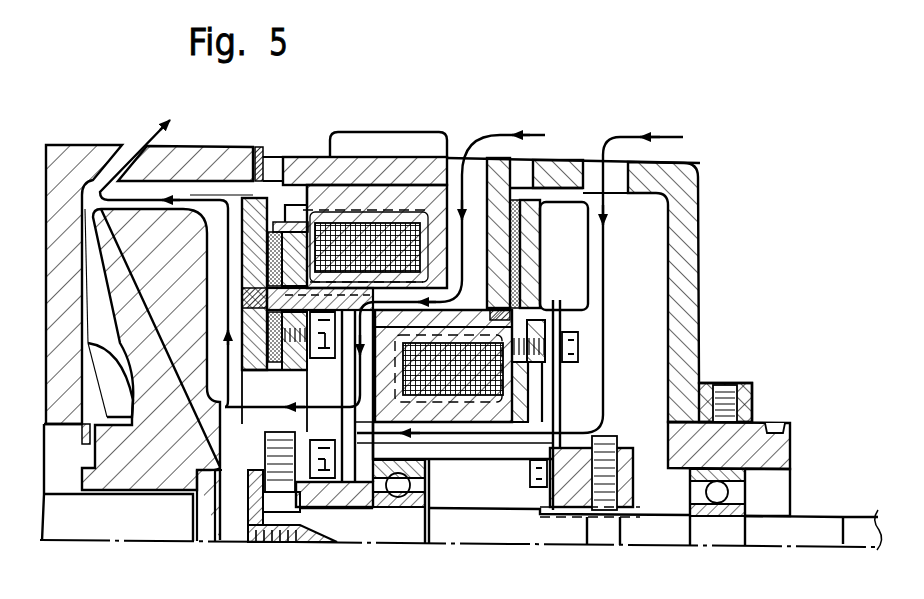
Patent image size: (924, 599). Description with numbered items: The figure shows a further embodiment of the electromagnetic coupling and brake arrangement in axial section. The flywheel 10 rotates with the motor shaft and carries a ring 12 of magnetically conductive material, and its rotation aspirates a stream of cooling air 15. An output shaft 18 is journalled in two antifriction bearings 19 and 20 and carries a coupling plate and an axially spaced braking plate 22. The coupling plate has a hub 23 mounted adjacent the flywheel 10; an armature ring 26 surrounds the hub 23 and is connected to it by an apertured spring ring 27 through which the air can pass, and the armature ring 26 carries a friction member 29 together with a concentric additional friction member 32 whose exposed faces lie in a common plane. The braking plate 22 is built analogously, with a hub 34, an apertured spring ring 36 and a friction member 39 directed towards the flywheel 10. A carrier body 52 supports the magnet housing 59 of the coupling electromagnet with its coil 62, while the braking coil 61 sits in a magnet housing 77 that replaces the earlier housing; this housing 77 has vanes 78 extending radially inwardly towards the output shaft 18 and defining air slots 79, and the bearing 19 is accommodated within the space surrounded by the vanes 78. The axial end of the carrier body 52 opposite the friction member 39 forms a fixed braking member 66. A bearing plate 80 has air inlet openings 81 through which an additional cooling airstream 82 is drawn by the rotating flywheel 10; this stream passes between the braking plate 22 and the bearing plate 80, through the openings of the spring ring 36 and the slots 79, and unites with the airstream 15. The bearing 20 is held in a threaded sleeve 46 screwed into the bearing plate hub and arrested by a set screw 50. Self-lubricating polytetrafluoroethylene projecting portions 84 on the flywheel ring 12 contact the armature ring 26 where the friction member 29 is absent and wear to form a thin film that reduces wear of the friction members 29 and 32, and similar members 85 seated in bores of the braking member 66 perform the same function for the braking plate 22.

The flywheel 10 is at (116, 497).
The ring 12 is at (250, 200).
The cooling airstream 15 is at (152, 133).
The output shaft 18 is at (468, 537).
The antifriction bearing 19 is at (427, 472).
The antifriction bearing 20 is at (745, 487).
The braking plate 22 is at (540, 263).
The hub 23 is at (352, 505).
The armature ring 26 is at (350, 313).
The spring ring 27 is at (307, 394).
The friction member 29 is at (270, 348).
The additional friction member 32 is at (268, 255).
The hub 34 is at (625, 455).
The spring ring 36 is at (556, 394).
The friction member 39 is at (516, 243).
The threaded sleeve 46 is at (786, 448).
The set screw 50 is at (728, 388).
The carrier body 52 is at (493, 170).
The magnet housing 59 is at (322, 183).
The coil 61 is at (458, 358).
The coil 62 is at (348, 240).
The braking member 66 is at (503, 217).
The magnet housing 77 is at (476, 422).
The vanes 78 is at (447, 450).
The air slots 79 is at (387, 447).
The bearing plate 80 is at (695, 260).
The air inlet openings 81 is at (597, 172).
The additional cooling airstream 82 is at (683, 137).
The projecting portions 84 is at (245, 296).
The members 85 is at (532, 305).